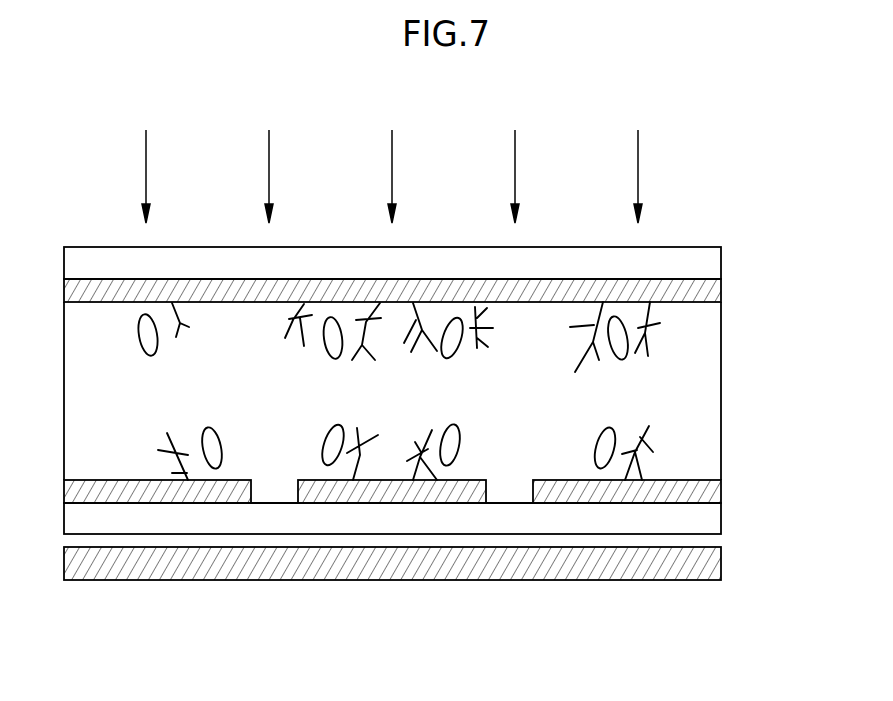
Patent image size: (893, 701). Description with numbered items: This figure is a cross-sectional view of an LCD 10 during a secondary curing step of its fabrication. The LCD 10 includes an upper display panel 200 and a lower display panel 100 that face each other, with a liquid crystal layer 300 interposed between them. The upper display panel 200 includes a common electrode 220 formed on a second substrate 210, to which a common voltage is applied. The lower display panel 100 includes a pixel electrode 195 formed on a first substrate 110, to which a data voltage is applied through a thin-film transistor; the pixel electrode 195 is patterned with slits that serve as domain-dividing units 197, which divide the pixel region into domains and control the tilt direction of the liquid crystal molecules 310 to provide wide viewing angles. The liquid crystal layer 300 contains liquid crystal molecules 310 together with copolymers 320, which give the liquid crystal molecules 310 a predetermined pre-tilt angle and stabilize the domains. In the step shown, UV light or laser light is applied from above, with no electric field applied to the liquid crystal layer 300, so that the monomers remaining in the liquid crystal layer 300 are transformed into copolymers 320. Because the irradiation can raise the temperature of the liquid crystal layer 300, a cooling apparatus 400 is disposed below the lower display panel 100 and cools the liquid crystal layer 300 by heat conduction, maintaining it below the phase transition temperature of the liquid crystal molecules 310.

The LCD 10 is at (452, 441).
The lower display panel 100 is at (452, 546).
The first substrate 110 is at (710, 518).
The pixel electrode 195 is at (720, 490).
The domain-dividing unit 197 is at (498, 489).
The upper display panel 200 is at (451, 275).
The second substrate 210 is at (710, 261).
The common electrode 220 is at (710, 292).
The liquid crystal layer 300 is at (451, 391).
The liquid crystal molecules 310 is at (622, 418).
The copolymers 320 is at (648, 326).
The cooling apparatus 400 is at (715, 568).